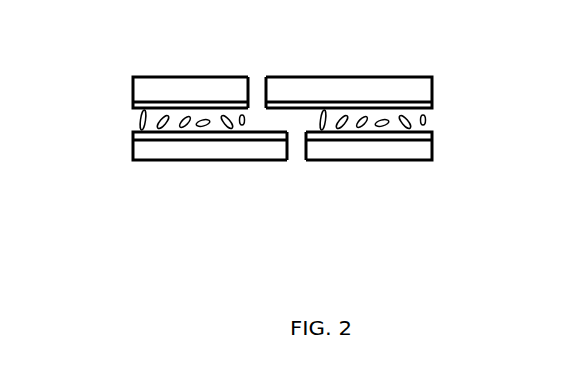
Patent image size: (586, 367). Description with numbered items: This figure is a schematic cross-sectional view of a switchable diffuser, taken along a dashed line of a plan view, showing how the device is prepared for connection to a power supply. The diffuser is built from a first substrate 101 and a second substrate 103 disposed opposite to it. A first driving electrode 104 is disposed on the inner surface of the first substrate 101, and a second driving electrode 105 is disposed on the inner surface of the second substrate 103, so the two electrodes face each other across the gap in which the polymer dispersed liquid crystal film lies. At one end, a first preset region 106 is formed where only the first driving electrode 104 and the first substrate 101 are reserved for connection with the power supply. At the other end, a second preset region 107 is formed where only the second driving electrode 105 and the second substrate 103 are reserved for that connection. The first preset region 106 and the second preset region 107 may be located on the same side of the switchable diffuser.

The first substrate 101 is at (432, 88).
The second substrate 103 is at (420, 152).
The first driving electrode 104 is at (133, 105).
The second driving electrode 105 is at (133, 132).
The first preset region 106 is at (302, 127).
The second preset region 107 is at (262, 108).